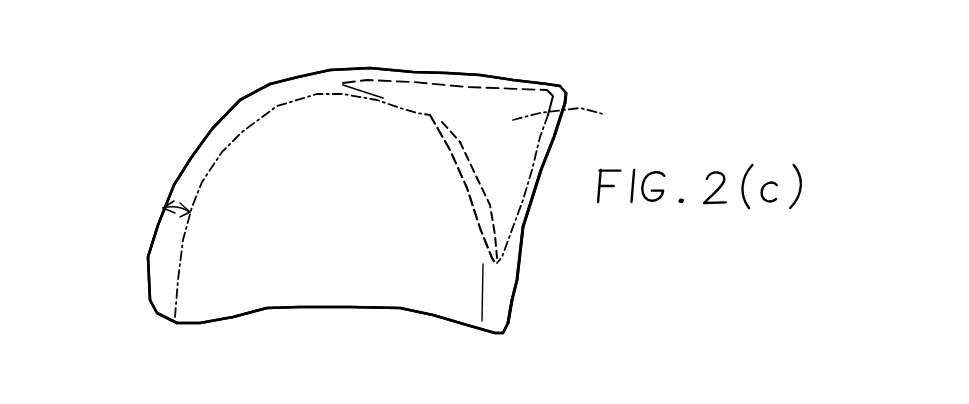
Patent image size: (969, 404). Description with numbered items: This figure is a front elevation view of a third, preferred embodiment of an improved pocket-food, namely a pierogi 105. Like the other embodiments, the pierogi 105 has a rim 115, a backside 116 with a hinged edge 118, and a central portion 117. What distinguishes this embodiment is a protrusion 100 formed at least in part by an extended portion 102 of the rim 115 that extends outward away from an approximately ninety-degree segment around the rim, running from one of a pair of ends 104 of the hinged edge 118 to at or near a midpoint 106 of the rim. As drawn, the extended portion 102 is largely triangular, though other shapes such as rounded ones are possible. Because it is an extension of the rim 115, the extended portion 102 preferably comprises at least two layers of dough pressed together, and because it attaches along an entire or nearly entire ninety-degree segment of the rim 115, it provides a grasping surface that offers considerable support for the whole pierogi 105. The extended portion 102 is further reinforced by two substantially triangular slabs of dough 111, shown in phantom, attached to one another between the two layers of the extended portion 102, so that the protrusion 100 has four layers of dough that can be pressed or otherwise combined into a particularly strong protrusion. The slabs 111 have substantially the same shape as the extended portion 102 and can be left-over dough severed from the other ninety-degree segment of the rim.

The protrusion 100 is at (609, 33).
The extended portion 102 is at (530, 220).
The ends 104 is at (592, 372).
The pierogi 105 is at (72, 40).
The midpoint 106 is at (332, 72).
The slabs of dough 111 is at (632, 133).
The rim 115 is at (165, 210).
The backside 116 is at (425, 364).
The central portion 117 is at (303, 127).
The hinged edge 118 is at (474, 349).